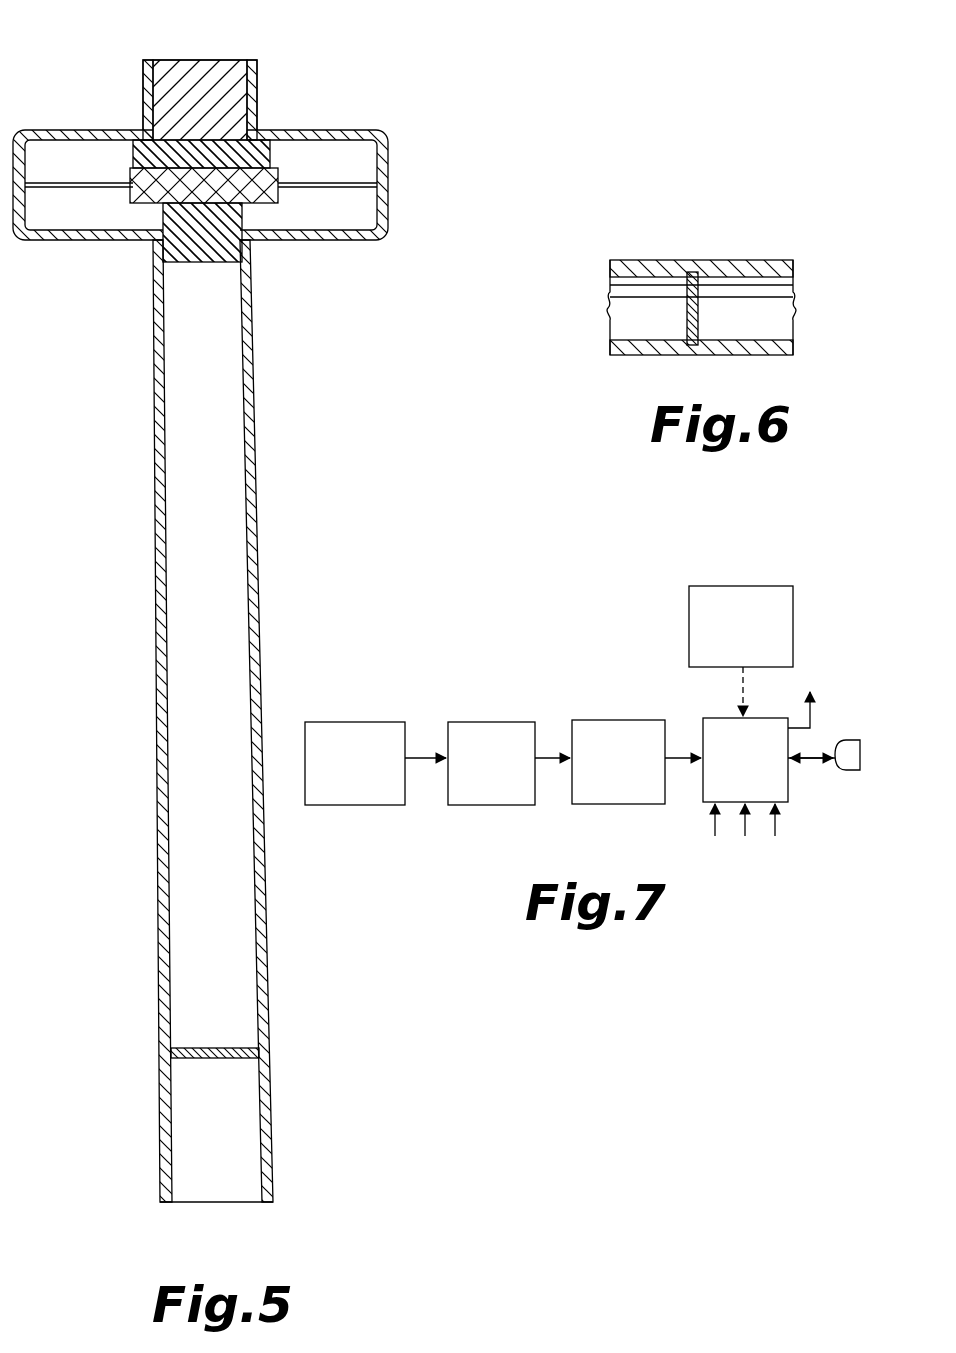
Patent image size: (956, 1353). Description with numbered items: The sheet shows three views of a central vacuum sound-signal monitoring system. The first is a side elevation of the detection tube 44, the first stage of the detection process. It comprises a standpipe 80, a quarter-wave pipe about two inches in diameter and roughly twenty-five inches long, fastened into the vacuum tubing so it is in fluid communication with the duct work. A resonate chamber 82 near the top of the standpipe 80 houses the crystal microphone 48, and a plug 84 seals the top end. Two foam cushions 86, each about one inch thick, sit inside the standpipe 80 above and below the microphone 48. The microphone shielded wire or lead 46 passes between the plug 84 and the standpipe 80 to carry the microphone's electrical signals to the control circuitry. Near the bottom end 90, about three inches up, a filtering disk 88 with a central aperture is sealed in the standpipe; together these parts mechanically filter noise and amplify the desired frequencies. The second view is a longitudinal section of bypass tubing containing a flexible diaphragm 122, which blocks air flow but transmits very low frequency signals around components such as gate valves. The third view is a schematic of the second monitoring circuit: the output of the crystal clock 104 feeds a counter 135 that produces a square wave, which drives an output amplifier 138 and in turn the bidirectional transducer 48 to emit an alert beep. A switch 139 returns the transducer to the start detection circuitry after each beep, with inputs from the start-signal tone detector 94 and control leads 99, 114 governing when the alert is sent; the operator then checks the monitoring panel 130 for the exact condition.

In FIG. 5, the detection tube 44 is at (244, 612).
In FIG. 5, the microphone shielded wire or lead 46 is at (247, 60).
In FIG. 7, the microphone shielded wire or lead 46 is at (815, 706).
In FIG. 5, the crystal microphone 48 is at (263, 205).
In FIG. 7, the crystal microphone 48 is at (860, 755).
In FIG. 5, the standpipe 80 is at (210, 721).
In FIG. 5, the resonate chamber 82 is at (388, 187).
In FIG. 5, the plug 84 is at (172, 61).
In FIG. 5, the foam cushion 86 is at (133, 160).
In FIG. 5, the filtering disk 88 is at (255, 1045).
In FIG. 5, the bottom end 90 is at (160, 1196).
In FIG. 7, the start-signal tone detector 94 is at (713, 825).
In FIG. 7, the lead 99 is at (742, 838).
In FIG. 7, the crystal clock 104 is at (355, 720).
In FIG. 7, the lead 114 is at (777, 822).
In FIG. 6, the flexible diaphragm 122 is at (700, 305).
In FIG. 7, the monitoring panel 130 is at (720, 585).
In FIG. 7, the counter 135 is at (492, 720).
In FIG. 7, the output amplifier 138 is at (612, 719).
In FIG. 7, the switch 139 is at (718, 718).